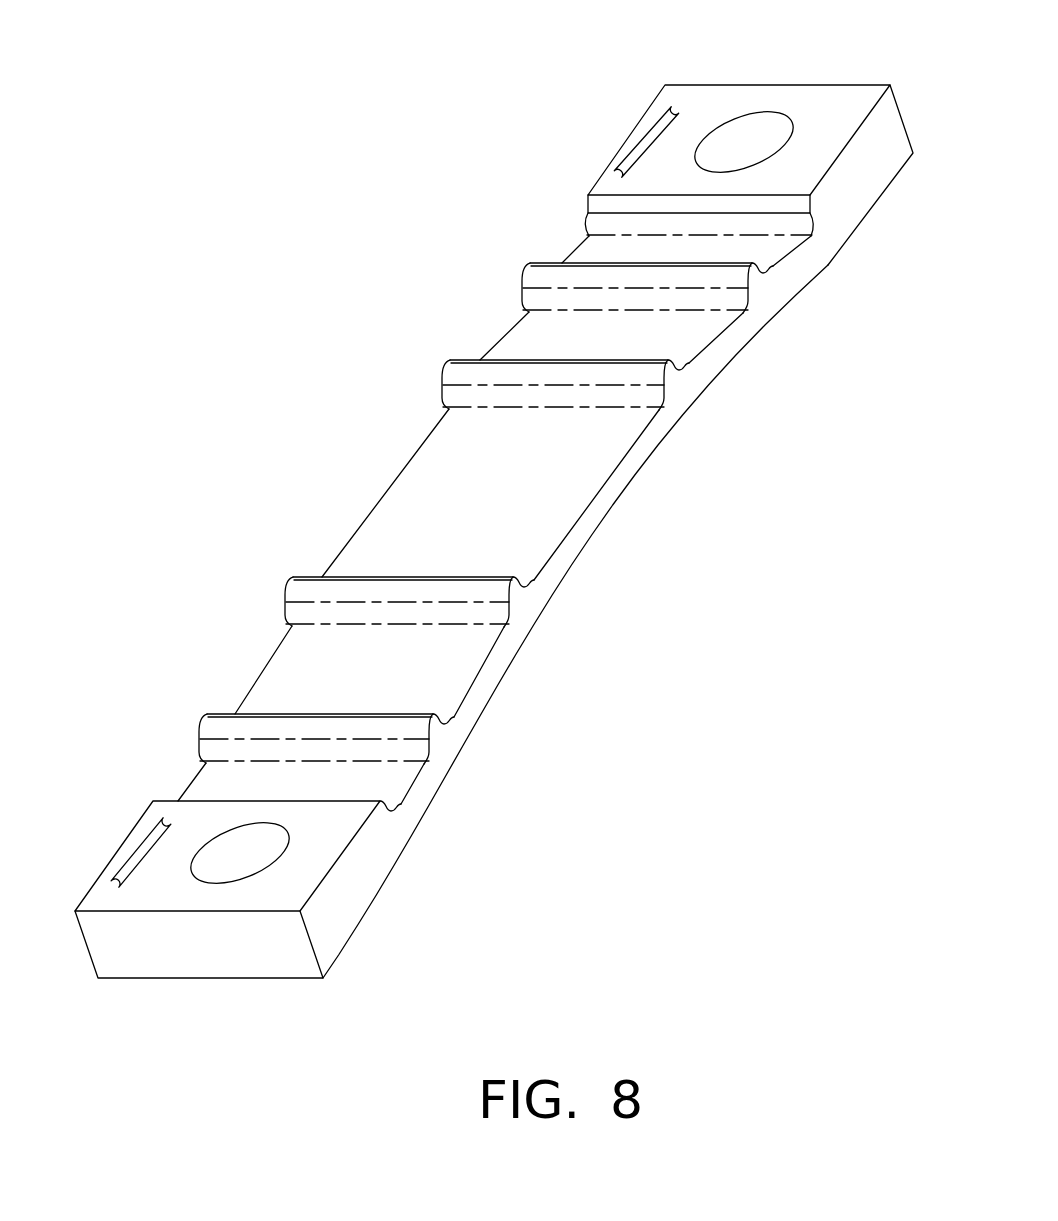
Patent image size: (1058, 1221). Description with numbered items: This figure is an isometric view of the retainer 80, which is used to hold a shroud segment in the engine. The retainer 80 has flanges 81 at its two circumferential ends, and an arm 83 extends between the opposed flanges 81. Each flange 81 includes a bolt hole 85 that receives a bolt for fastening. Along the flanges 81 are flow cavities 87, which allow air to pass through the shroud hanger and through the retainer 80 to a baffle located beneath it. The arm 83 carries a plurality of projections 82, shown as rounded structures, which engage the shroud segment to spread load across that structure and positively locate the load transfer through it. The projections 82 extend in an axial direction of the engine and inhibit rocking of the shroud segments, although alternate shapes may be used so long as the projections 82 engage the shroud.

The retainer 80 is at (438, 73).
The flange 81 is at (830, 208).
The projection 82 is at (528, 264).
The arm 83 is at (592, 537).
The bolt hole 85 is at (740, 127).
The flow cavity 87 is at (657, 140).